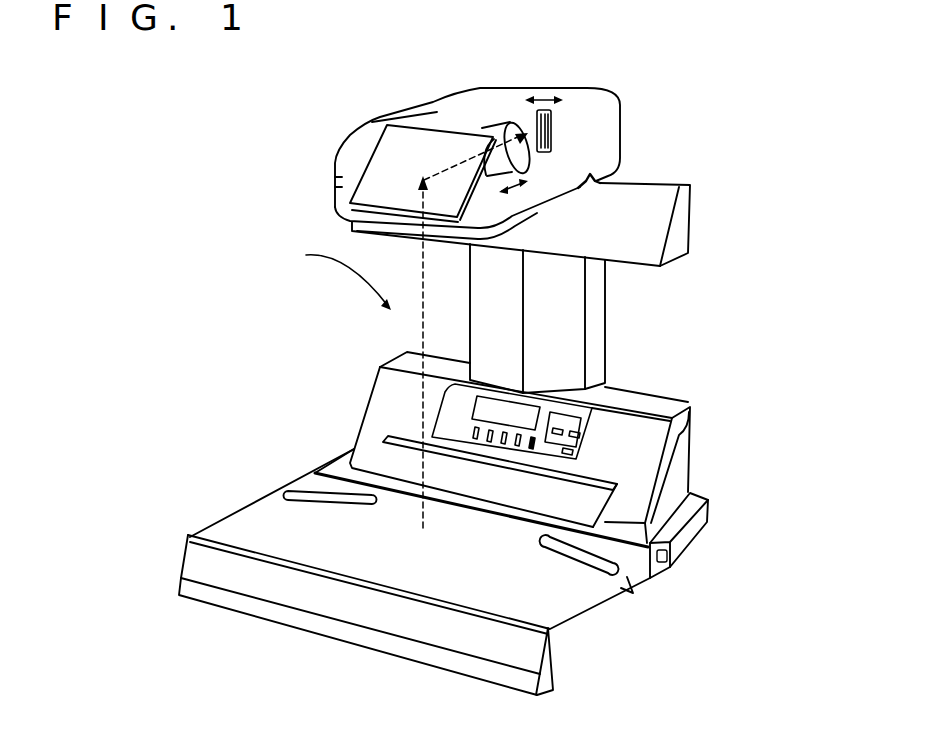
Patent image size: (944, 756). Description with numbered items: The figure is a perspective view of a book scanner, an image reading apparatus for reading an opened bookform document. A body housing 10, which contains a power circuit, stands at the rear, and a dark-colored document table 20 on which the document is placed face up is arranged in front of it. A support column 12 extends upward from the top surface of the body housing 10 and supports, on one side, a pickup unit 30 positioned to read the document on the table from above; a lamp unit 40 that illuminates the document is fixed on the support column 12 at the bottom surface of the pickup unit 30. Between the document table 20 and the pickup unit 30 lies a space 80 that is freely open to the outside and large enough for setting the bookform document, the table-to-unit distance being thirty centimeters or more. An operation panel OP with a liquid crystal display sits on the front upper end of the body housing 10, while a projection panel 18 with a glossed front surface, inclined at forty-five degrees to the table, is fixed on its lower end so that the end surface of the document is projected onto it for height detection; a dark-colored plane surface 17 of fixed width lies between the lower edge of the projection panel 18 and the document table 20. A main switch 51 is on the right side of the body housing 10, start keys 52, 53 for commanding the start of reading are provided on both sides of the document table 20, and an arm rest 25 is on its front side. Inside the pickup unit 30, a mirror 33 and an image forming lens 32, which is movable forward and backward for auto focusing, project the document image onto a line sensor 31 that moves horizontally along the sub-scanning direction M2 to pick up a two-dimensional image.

The body housing 10 is at (690, 410).
The support column 12 is at (600, 287).
The dark-colored plane surface 17 is at (370, 478).
The projection panel 18 is at (387, 447).
The document table 20 is at (557, 608).
The arm rest 25 is at (307, 596).
The pickup unit 30 is at (364, 128).
The line sensor 31 is at (552, 160).
The image forming lens 32 is at (497, 130).
The mirror 33 is at (380, 163).
The lamp unit 40 is at (682, 225).
The main switch 51 is at (668, 560).
The start key 52 is at (303, 490).
The start key 53 is at (592, 556).
The space 80 is at (331, 275).
The operation panel OP is at (573, 430).
The sub-scanning direction M2 is at (543, 102).